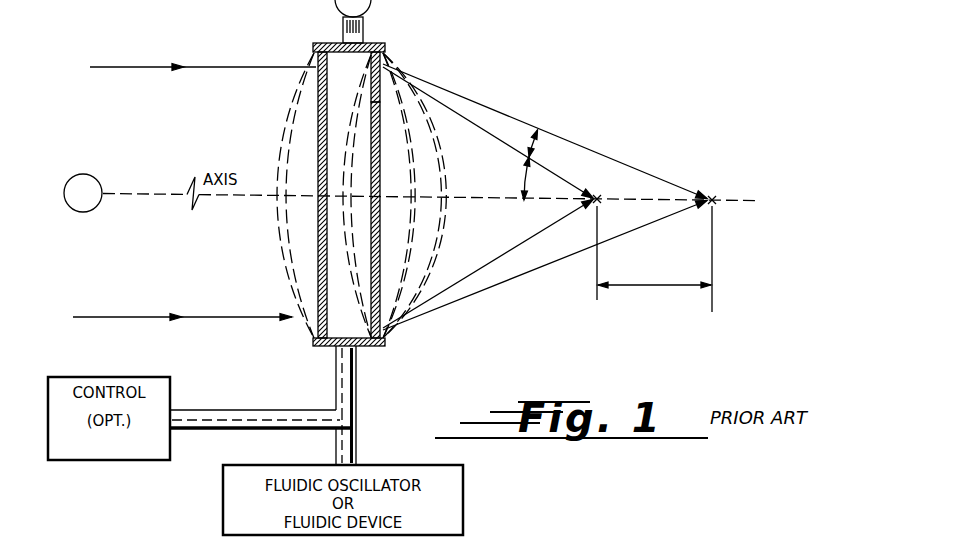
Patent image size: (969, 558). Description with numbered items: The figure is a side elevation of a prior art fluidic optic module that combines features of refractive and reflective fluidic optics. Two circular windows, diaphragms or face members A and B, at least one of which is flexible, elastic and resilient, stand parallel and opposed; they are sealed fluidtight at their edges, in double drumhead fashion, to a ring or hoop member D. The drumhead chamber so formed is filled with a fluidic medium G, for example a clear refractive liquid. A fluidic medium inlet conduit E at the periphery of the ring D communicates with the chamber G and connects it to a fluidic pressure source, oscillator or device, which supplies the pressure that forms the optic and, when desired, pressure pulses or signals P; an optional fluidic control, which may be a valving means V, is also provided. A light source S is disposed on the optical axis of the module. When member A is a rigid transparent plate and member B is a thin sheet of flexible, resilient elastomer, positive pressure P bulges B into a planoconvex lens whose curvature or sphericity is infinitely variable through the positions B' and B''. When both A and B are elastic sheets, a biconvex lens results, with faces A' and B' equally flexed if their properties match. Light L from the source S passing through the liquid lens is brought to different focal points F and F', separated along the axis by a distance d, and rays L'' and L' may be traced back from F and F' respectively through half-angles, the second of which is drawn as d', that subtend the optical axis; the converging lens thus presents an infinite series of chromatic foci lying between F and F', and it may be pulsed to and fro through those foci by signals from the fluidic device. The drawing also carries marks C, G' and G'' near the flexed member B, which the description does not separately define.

The light rays L is at (183, 193).
The light source S is at (83, 193).
The valve V is at (353, 21).
The ring or hoop member D is at (370, 44).
The face member A is at (290, 195).
The flexed face of member A A' is at (274, 195).
The fluidic medium G is at (309, 196).
The right wall C is at (380, 87).
The face member B is at (419, 205).
The first flexed curvature of member B B' is at (428, 195).
The second flexed curvature of member B B'' is at (445, 195).
The fluid lens first shape G' is at (412, 323).
The fluid lens second shape G'' is at (476, 120).
The light rays L' is at (545, 197).
The light rays L'' is at (488, 197).
The focal point F is at (604, 210).
The focal point F' is at (726, 211).
The focal separation distance d is at (612, 221).
The half-angle d' is at (516, 165).
The fluidic medium inlet conduit E is at (353, 385).
The pressure pulses or signals P is at (355, 447).